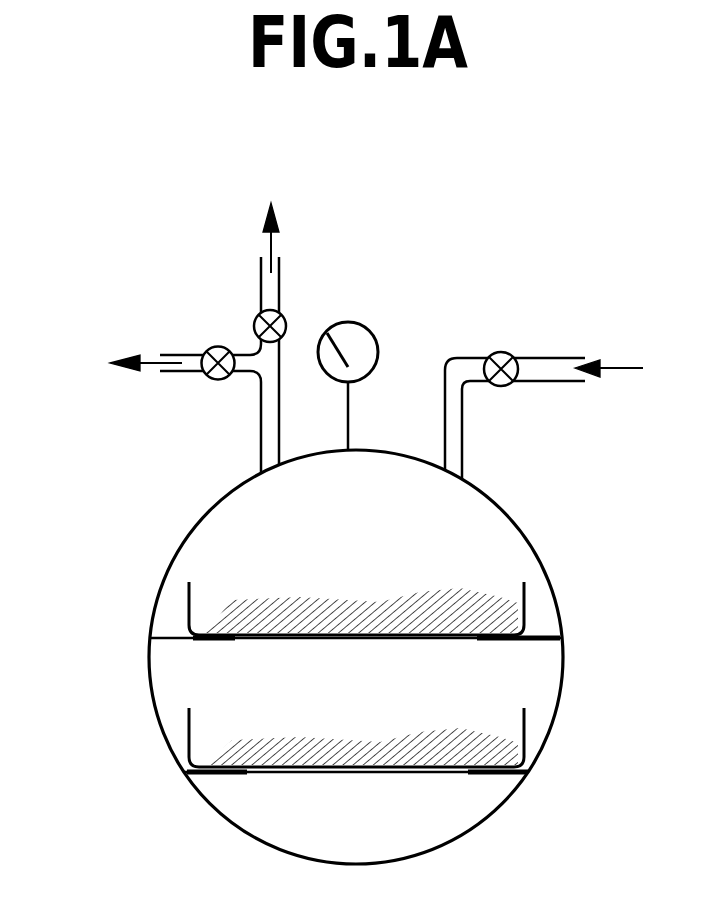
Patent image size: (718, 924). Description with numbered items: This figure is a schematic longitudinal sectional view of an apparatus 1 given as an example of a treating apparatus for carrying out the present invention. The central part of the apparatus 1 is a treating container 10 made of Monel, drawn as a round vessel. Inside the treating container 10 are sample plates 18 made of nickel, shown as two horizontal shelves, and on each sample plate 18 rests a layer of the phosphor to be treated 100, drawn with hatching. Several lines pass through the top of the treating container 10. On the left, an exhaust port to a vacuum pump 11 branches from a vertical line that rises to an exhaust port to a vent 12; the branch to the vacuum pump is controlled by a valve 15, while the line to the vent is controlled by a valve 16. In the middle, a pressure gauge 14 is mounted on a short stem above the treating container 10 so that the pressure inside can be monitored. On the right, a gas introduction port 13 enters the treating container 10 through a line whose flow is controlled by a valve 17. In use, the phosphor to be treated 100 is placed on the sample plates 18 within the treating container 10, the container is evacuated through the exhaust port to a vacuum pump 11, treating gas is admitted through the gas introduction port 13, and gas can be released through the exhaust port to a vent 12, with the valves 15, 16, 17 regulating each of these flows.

The apparatus 1 is at (78, 188).
The treating container 10 is at (517, 520).
The exhaust port to a vacuum pump 11 is at (164, 362).
The exhaust port to a vent 12 is at (274, 320).
The gas introduction port 13 is at (566, 414).
The pressure gauge 14 is at (372, 323).
The valve 15 is at (217, 346).
The valve 16 is at (285, 318).
The valve 17 is at (498, 353).
The sample plate 18 is at (543, 640).
The phosphor to be treated 100 is at (333, 755).